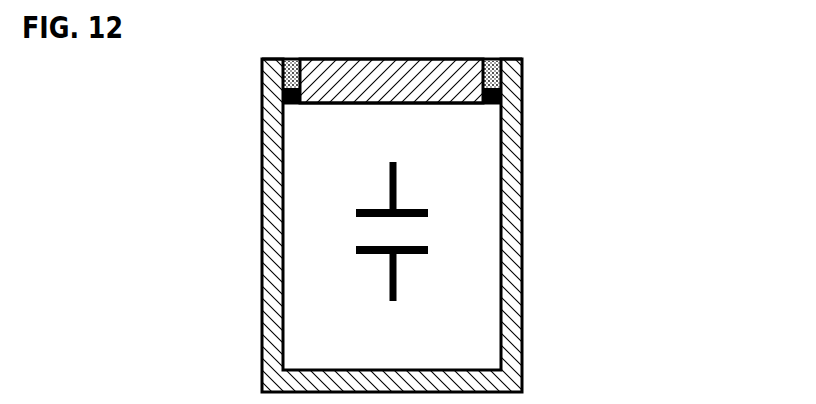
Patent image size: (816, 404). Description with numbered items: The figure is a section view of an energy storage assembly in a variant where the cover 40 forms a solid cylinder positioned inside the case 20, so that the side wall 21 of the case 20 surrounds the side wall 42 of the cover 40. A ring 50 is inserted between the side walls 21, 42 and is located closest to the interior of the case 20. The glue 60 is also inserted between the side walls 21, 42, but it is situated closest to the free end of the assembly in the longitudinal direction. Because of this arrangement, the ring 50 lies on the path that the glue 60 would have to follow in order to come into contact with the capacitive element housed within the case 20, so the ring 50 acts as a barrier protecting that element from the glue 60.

The case 20 is at (253, 215).
The side wall of the case 21 is at (273, 301).
The cover 40 is at (411, 50).
The side wall of the cover 42 is at (290, 70).
The ring 50 is at (496, 95).
The glue 60 is at (496, 72).